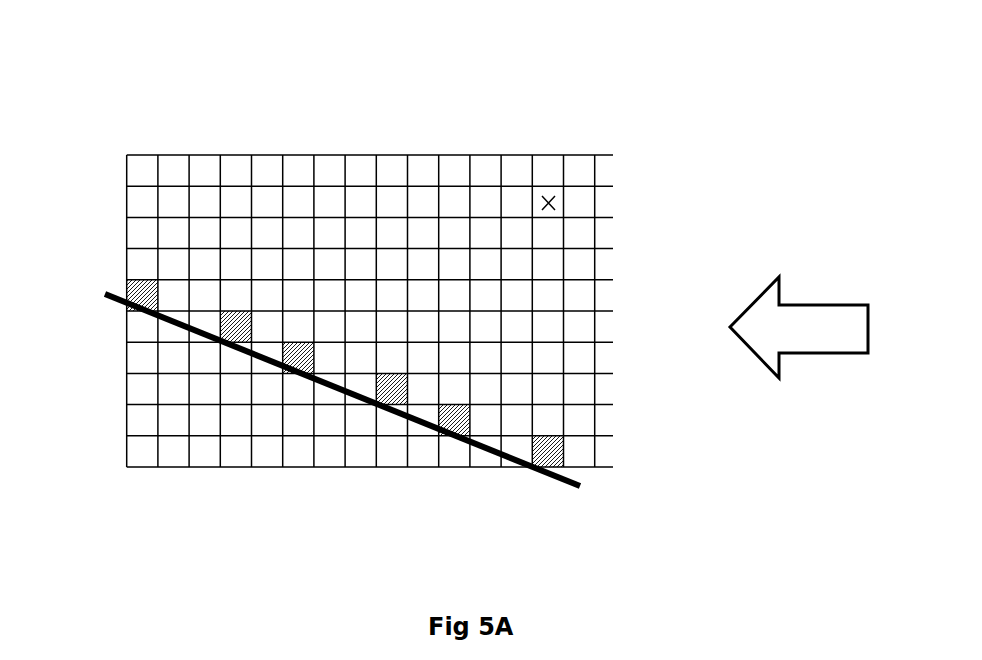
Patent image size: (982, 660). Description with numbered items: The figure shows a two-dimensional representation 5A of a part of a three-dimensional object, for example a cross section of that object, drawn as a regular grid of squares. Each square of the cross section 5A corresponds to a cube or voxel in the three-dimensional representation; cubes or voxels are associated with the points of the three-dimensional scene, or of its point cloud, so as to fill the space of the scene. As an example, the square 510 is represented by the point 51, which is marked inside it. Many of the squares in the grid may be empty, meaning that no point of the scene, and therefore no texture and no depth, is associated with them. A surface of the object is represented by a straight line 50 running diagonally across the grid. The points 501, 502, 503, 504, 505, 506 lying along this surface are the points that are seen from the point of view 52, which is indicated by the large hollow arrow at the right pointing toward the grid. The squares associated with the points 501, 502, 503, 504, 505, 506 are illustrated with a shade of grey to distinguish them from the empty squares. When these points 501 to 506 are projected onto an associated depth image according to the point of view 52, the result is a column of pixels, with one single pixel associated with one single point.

The 2D representation 5A is at (168, 140).
The straight line 50 is at (110, 298).
The point 51 is at (543, 208).
The square 510 is at (559, 204).
The point 501 is at (137, 292).
The point 502 is at (238, 345).
The point 503 is at (304, 362).
The point 504 is at (391, 392).
The point 505 is at (462, 424).
The point 506 is at (552, 455).
The point of view 52 is at (822, 304).